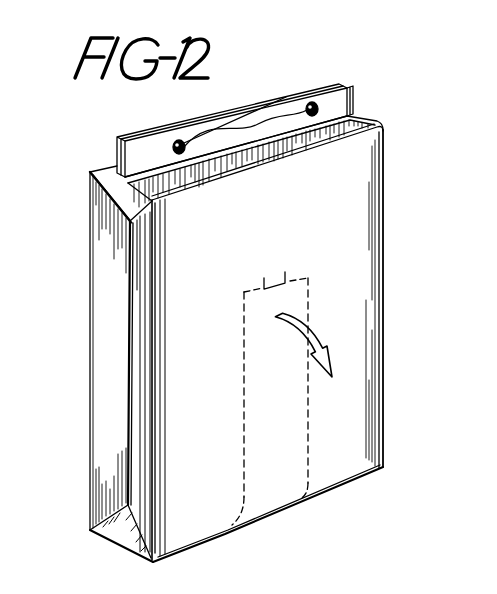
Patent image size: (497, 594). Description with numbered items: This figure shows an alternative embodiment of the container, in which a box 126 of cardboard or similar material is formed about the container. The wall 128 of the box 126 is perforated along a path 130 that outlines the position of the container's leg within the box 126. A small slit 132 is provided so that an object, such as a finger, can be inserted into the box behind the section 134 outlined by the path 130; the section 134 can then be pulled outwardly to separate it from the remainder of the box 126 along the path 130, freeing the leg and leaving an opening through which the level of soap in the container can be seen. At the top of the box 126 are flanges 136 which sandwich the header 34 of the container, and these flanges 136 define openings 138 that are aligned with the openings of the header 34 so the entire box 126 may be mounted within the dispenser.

The header 34 is at (285, 97).
The box 126 is at (345, 266).
The wall 128 is at (335, 462).
The path 130 is at (242, 500).
The slit 132 is at (276, 277).
The section 134 is at (282, 457).
The flanges 136 is at (354, 108).
The openings 138 is at (186, 141).